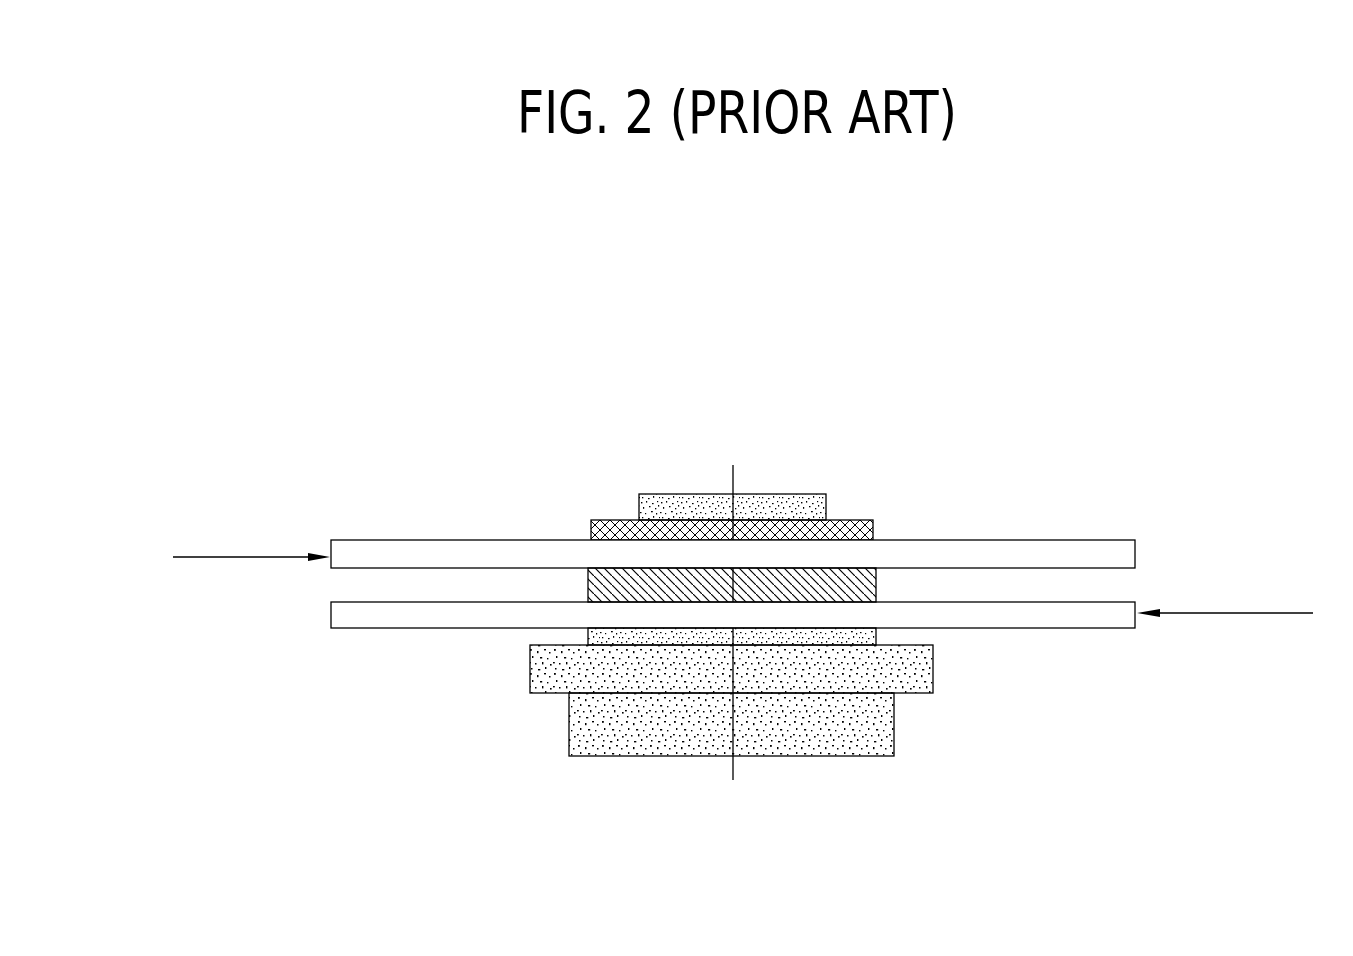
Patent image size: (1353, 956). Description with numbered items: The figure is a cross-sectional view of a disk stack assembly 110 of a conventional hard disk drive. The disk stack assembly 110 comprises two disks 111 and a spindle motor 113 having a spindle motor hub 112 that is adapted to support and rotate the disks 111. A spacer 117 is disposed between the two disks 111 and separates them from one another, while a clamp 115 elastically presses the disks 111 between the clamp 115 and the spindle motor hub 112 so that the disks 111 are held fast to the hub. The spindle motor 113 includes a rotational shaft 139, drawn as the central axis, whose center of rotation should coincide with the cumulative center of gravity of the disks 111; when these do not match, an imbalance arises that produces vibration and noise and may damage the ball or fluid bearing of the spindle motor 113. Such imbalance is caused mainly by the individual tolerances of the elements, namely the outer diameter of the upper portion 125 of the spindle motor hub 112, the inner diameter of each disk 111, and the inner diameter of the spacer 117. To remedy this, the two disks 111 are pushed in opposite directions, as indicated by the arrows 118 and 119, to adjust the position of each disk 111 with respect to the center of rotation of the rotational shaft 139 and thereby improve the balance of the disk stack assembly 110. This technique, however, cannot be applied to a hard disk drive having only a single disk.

The disk stack assembly 110 is at (165, 268).
The disks 111 is at (438, 552).
The spindle motor hub 112 is at (873, 635).
The spindle motor 113 is at (928, 747).
The clamp 115 is at (620, 527).
The spacer 117 is at (827, 580).
The arrow 118 is at (1232, 612).
The arrow 119 is at (237, 558).
The upper portion of spindle motor hub 125 is at (793, 503).
The rotational shaft 139 is at (713, 447).